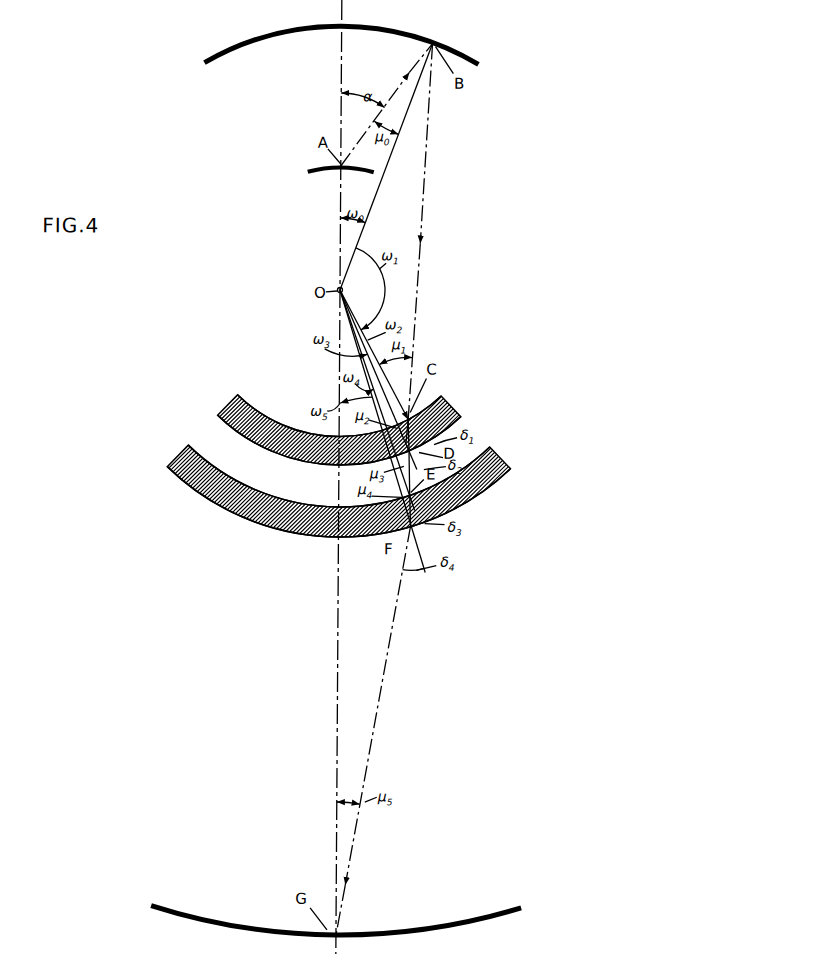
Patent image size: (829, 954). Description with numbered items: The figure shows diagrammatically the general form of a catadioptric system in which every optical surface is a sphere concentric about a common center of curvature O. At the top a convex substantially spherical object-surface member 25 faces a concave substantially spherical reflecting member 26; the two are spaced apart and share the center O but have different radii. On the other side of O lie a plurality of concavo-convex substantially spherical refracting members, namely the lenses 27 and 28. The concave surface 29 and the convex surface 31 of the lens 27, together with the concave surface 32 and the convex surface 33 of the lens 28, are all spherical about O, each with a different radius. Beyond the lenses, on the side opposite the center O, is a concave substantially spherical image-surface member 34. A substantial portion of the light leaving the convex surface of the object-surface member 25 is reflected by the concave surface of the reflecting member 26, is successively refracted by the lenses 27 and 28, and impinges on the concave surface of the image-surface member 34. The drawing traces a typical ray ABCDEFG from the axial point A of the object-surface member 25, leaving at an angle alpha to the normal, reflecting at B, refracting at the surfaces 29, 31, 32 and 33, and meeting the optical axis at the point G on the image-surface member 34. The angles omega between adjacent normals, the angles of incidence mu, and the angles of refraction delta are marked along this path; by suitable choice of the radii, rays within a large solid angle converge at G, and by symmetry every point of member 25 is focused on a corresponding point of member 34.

The object-surface member 25 is at (317, 175).
The reflecting member 26 is at (247, 41).
The lens 27 is at (448, 396).
The lens 28 is at (498, 450).
The concave surface 29 is at (257, 406).
The convex surface 31 is at (232, 428).
The concave surface 32 is at (272, 497).
The convex surface 33 is at (200, 494).
The image-surface member 34 is at (428, 926).